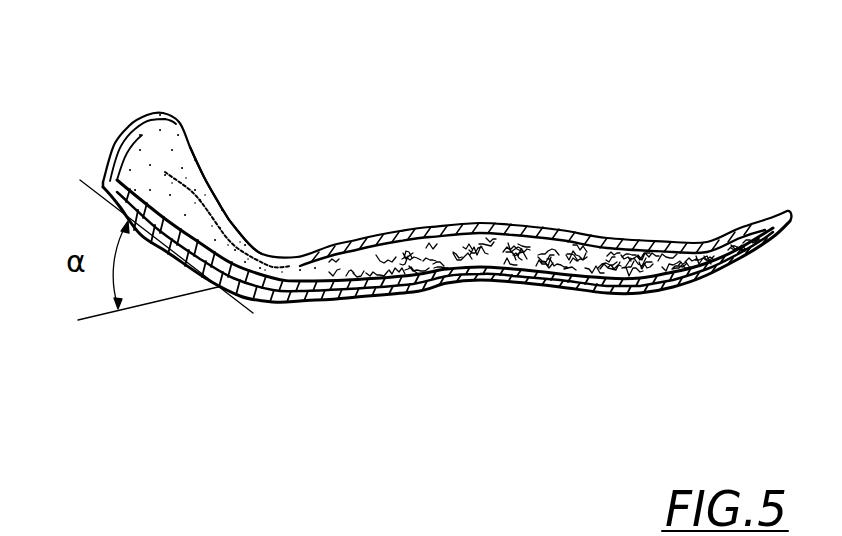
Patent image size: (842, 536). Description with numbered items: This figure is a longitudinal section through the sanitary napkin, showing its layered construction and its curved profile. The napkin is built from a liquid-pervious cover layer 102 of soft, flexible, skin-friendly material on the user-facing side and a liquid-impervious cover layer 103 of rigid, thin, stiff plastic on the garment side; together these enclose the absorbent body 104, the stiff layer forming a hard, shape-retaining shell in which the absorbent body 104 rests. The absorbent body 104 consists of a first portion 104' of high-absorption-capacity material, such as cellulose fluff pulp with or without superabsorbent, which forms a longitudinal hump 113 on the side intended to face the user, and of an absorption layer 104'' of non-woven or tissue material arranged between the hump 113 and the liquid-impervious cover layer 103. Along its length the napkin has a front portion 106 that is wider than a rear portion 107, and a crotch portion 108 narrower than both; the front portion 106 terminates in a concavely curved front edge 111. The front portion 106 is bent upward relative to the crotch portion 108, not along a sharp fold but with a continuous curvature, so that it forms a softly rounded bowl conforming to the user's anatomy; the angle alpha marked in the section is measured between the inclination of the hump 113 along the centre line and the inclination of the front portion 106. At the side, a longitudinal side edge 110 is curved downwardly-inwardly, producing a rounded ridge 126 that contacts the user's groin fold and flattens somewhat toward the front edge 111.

The liquid-pervious cover layer 102 is at (673, 243).
The liquid-impervious cover layer 103 is at (603, 294).
The absorbent body 104 is at (544, 151).
The first portion of the absorbent body 104' is at (532, 144).
The absorption layer 104'' is at (445, 299).
The front portion 106 is at (183, 141).
The rear portion 107 is at (690, 285).
The crotch portion 108 is at (365, 278).
The longitudinal side edge 110 is at (267, 253).
The front edge 111 is at (110, 126).
The longitudinal hump 113 is at (506, 242).
The rounded ridge 126 is at (232, 222).